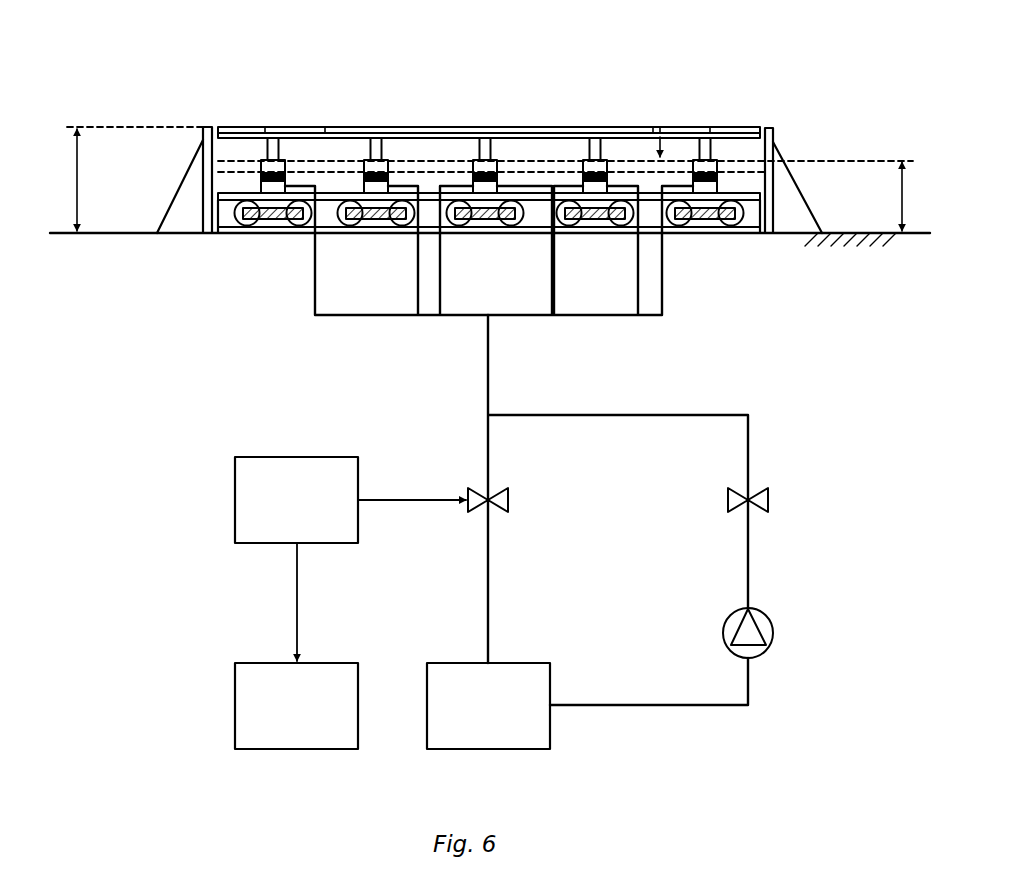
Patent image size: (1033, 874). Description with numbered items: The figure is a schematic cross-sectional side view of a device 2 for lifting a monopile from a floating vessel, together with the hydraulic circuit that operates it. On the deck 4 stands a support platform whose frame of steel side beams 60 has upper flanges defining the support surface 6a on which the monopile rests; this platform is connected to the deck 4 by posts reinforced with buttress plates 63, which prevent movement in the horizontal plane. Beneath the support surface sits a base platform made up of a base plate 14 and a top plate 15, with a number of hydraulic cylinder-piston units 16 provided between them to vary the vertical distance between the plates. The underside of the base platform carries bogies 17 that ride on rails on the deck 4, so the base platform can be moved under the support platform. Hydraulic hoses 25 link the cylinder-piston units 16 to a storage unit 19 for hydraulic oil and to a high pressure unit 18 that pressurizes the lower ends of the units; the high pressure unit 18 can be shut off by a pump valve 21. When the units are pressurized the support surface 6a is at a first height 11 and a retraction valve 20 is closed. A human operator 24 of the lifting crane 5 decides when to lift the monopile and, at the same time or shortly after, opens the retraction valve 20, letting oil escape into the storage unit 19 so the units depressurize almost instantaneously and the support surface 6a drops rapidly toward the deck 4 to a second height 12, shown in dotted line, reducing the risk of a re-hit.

The device 2 is at (194, 82).
The deck 4 is at (857, 232).
The lifting crane 5 is at (296, 706).
The support surface 6a is at (561, 126).
The first height 11 is at (74, 178).
The second height 12 is at (905, 196).
The base plate 14 is at (752, 229).
The top plate 15 is at (745, 137).
The cylinder-piston units 16 is at (283, 166).
The bogies 17 is at (273, 222).
The high pressure unit 18 is at (785, 627).
The storage unit 19 is at (488, 706).
The retraction valve 20 is at (520, 499).
The pump valve 21 is at (780, 497).
The human operator 24 is at (350, 559).
The hydraulic hoses 25 is at (315, 298).
The side beams 60 is at (430, 127).
The buttress plates 63 is at (182, 190).